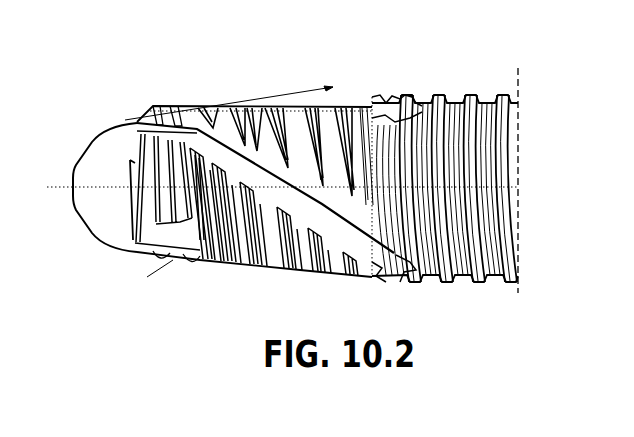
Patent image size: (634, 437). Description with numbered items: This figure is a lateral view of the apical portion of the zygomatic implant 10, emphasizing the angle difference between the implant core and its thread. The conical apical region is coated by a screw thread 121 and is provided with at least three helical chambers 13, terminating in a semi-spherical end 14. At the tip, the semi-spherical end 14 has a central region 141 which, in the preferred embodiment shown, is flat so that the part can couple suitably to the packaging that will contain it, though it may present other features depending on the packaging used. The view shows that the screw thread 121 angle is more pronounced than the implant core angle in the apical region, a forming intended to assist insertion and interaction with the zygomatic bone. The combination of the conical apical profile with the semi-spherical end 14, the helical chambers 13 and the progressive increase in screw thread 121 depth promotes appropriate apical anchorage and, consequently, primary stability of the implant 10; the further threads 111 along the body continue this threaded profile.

The zygomatic implant 10 is at (508, 61).
The threads 111 is at (471, 94).
The helical chambers 13 is at (203, 153).
The semi-spherical end 14 is at (87, 147).
The central region 141 is at (71, 181).
The screw thread 121 is at (317, 280).